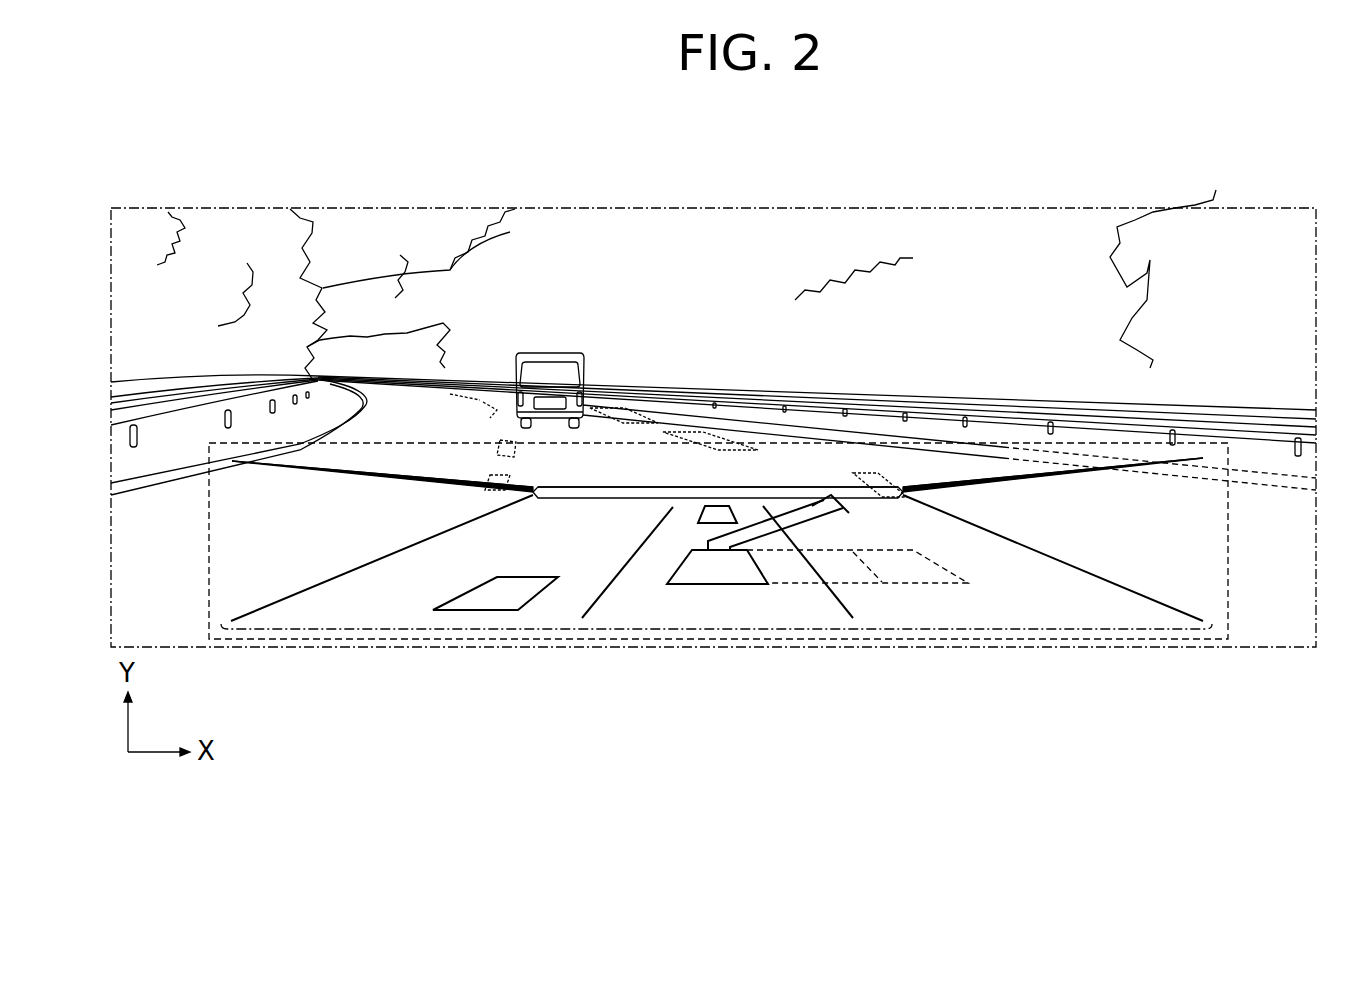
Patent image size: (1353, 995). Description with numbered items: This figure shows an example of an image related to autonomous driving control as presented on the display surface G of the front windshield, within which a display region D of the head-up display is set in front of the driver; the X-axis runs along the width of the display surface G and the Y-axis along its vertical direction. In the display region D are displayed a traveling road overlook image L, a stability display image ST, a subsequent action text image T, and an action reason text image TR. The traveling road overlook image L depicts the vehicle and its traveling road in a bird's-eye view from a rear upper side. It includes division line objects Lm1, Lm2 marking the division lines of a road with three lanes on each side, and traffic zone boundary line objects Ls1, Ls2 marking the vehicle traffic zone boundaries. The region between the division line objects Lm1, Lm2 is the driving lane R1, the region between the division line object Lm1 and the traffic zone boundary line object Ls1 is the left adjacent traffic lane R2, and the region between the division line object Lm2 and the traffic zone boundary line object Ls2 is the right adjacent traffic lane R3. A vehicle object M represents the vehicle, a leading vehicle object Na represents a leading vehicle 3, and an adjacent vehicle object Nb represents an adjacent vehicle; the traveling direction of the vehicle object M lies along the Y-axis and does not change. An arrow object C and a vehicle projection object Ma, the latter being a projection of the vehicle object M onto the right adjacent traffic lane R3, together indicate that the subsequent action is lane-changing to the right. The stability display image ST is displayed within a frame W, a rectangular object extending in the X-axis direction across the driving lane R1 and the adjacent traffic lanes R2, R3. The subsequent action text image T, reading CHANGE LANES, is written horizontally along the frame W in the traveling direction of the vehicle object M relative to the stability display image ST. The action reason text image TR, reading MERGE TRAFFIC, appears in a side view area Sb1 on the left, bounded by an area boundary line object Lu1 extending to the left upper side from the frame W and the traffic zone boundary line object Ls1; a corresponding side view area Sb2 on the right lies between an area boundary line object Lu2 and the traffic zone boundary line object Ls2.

The display surface G is at (1213, 208).
The display region D is at (1228, 618).
The leading vehicle 3 is at (548, 353).
The frame W is at (552, 487).
The side view area Sb1 is at (270, 483).
The area boundary line object Lu1 is at (324, 457).
The action reason text image TR is at (376, 488).
The stability display image ST is at (599, 490).
The subsequent action text image T is at (773, 457).
The side view area Sb2 is at (1047, 494).
The area boundary line object Lu2 is at (1092, 470).
The traffic zone boundary line object Ls1 is at (278, 603).
The traffic zone boundary line object Ls2 is at (1158, 603).
The division line object Lm1 is at (602, 603).
The division line object Lm2 is at (837, 607).
The adjacent vehicle object Nb is at (482, 611).
The vehicle object M is at (685, 585).
The leading vehicle object Na is at (700, 523).
The arrow object C is at (780, 530).
The vehicle projection object Ma is at (925, 584).
The traveling road overlook image L is at (723, 629).
The driving lane R1 is at (770, 608).
The left adjacent traffic lane R2 is at (368, 608).
The right adjacent traffic lane R3 is at (1018, 610).